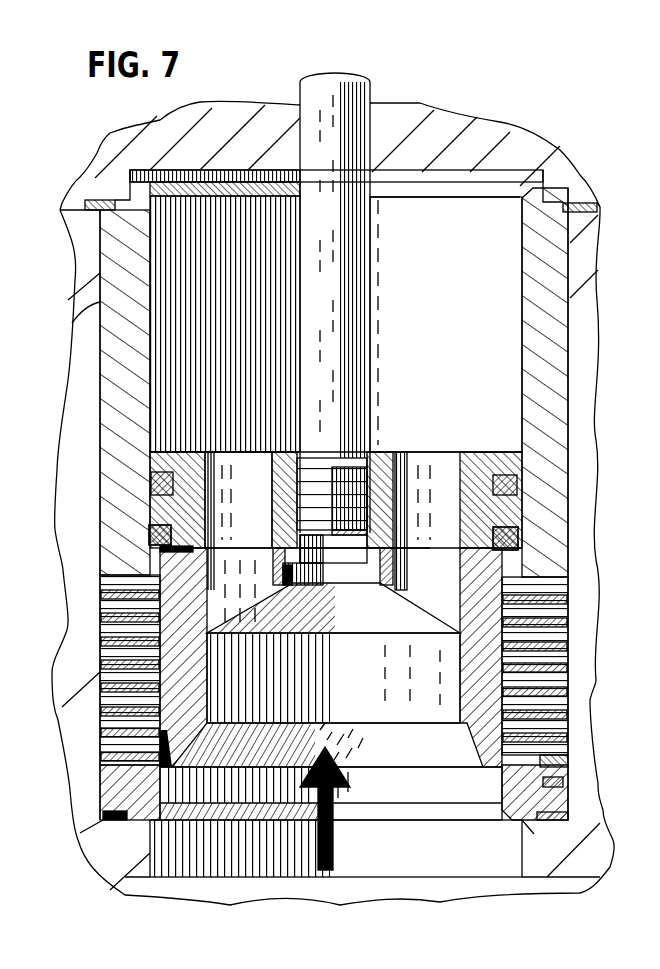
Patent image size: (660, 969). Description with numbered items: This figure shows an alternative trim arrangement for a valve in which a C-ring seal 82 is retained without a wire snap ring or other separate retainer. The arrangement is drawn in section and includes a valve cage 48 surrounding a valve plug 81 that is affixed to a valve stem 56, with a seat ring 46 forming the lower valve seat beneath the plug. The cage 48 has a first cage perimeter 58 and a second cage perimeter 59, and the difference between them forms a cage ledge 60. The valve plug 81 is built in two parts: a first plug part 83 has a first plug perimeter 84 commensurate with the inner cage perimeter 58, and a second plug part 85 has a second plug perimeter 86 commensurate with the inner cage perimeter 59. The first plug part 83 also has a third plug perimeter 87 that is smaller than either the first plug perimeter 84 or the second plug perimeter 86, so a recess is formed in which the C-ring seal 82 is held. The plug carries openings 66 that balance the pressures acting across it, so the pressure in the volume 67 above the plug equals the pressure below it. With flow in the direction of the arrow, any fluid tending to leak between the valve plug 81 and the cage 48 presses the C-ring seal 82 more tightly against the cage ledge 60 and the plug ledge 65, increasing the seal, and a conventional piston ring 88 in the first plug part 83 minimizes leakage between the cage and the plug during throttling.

The seat ring 46 is at (537, 790).
The valve cage 48 is at (550, 250).
The valve stem 56 is at (352, 106).
The first cage perimeter 58 is at (153, 293).
The second cage perimeter 59 is at (207, 547).
The cage ledge 60 is at (153, 549).
The plug ledge 65 is at (148, 503).
The openings 66 is at (414, 455).
The volume 67 is at (457, 277).
The valve plug 81 is at (502, 723).
The C-ring seal 82 is at (150, 532).
The first plug part 83 is at (283, 450).
The first plug perimeter 84 is at (118, 452).
The second plug part 85 is at (170, 670).
The second plug perimeter 86 is at (105, 631).
The third plug perimeter 87 is at (229, 450).
The piston ring 88 is at (148, 478).